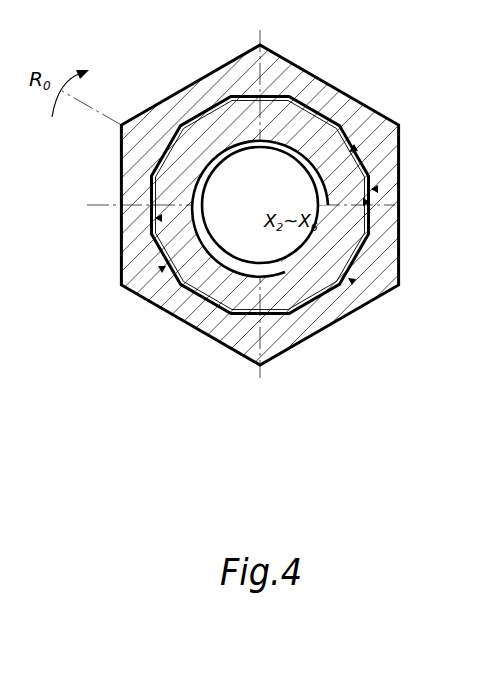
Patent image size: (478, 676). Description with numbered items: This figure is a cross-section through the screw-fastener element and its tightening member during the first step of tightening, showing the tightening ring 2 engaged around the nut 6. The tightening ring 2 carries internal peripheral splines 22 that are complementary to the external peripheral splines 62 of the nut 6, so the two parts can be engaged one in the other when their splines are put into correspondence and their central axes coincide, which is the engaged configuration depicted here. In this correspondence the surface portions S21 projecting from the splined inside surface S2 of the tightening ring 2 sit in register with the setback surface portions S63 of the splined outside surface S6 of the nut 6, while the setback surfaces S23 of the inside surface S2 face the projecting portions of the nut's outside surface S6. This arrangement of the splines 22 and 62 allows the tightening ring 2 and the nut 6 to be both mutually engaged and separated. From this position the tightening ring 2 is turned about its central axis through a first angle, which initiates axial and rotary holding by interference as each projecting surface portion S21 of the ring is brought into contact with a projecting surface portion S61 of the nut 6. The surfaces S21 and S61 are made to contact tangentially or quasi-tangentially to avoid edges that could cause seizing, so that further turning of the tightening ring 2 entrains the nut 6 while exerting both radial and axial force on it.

The tightening ring 2 is at (366, 124).
The internal peripheral splines 22 is at (204, 102).
The nut 6 is at (221, 288).
The external peripheral splines 62 is at (250, 147).
The splined inside surface S2 is at (162, 218).
The splined outside surface S6 is at (160, 270).
The projecting surface portion S21 is at (355, 149).
The projecting surface portion S61 is at (378, 189).
The setback surface S23 is at (363, 202).
The setback surface portion S63 is at (354, 282).